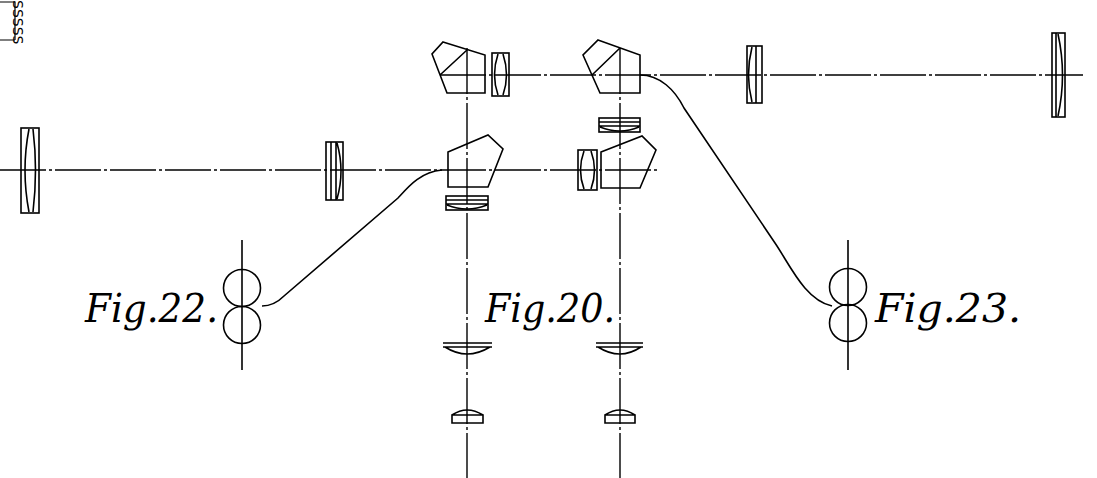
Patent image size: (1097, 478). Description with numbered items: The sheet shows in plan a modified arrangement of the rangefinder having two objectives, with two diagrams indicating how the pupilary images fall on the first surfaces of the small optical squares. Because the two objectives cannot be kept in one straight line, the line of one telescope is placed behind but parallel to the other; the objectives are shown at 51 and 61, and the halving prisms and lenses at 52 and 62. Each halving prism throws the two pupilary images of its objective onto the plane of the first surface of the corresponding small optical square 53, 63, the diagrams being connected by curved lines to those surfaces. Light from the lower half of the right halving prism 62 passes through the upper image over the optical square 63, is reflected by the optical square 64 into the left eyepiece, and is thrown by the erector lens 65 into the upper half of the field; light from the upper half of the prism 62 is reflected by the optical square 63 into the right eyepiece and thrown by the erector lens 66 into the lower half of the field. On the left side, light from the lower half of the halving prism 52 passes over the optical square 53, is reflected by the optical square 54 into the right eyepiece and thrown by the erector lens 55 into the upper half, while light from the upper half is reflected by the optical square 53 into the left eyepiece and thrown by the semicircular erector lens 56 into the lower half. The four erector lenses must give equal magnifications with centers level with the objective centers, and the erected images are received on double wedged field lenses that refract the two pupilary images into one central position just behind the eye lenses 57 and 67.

In FIG. 22, the objective 51 is at (40, 141).
In FIG. 22, the halving prism 52 is at (344, 152).
In FIG. 22, the optical square 53 is at (492, 180).
In FIG. 20, the optical square 54 is at (637, 178).
In FIG. 20, the erector lens 55 is at (579, 188).
In FIG. 22, the erector lens 56 is at (462, 210).
In FIG. 22, the eye lens 57 is at (465, 353).
In FIG. 23, the objective 61 is at (1052, 38).
In FIG. 23, the halving prism 62 is at (763, 52).
In FIG. 23, the optical square 63 is at (626, 58).
In FIG. 20, the optical square 64 is at (433, 72).
In FIG. 20, the erector lens 65 is at (510, 82).
In FIG. 23, the erector lens 66 is at (635, 118).
In FIG. 23, the eye lens 67 is at (633, 352).